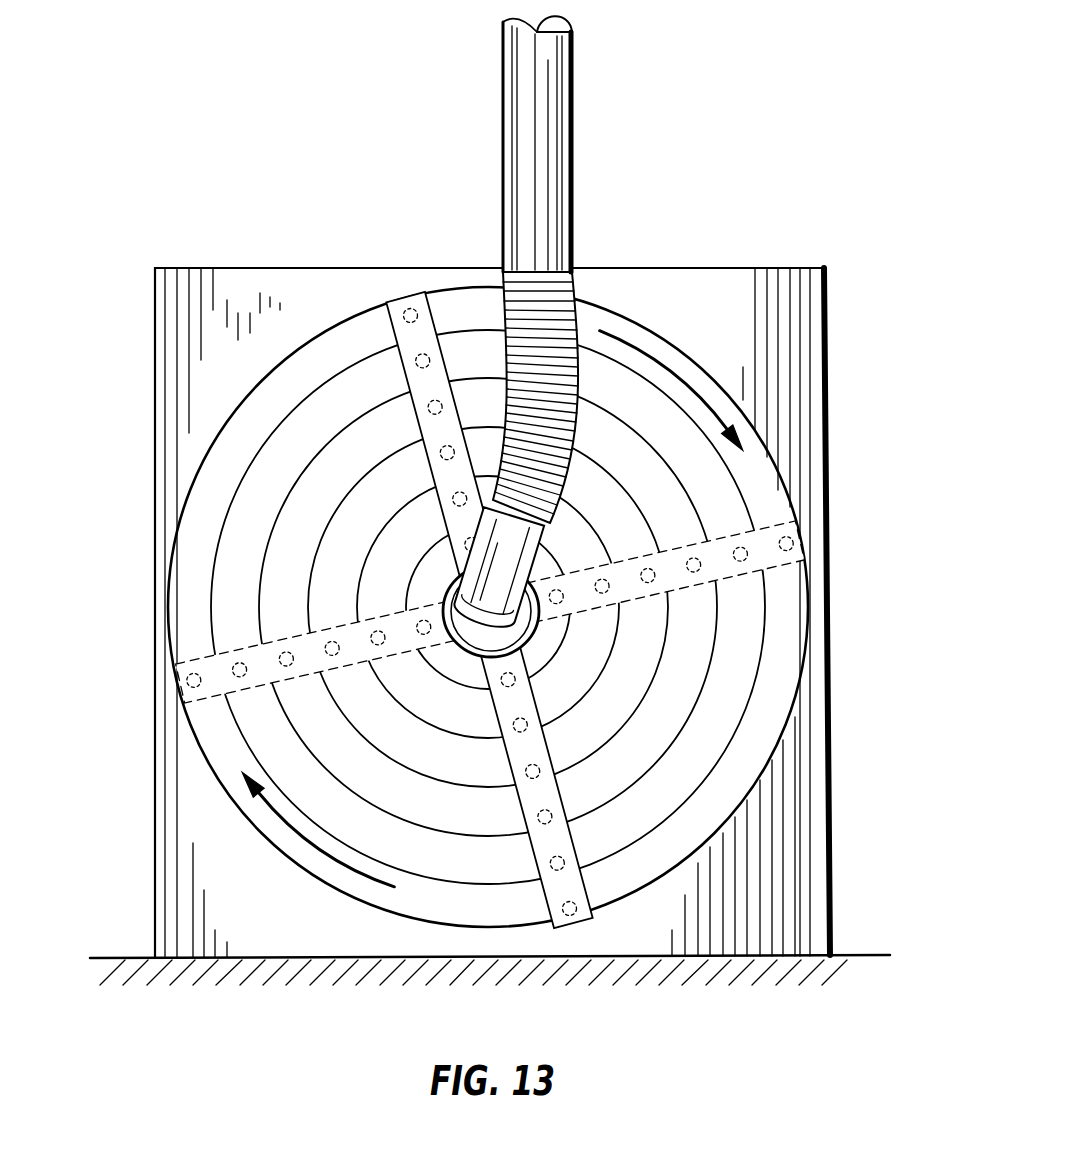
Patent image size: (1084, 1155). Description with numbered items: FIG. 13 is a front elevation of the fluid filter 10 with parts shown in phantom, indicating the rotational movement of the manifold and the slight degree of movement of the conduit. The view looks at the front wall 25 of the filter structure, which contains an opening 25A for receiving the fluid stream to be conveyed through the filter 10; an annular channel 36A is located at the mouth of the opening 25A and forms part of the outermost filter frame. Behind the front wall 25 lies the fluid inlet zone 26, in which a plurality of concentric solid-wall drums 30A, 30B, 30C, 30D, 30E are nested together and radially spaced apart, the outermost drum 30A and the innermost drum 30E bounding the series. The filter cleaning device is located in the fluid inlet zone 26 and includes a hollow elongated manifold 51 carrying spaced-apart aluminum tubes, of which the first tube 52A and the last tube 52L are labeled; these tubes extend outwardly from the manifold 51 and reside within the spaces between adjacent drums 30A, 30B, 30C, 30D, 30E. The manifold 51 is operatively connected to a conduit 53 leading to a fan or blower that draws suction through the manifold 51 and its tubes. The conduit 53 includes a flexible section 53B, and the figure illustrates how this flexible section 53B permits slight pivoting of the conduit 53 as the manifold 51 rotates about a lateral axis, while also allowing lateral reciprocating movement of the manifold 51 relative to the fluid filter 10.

The fluid filter 10 is at (769, 222).
The front wall 25 is at (712, 307).
The opening 25A is at (214, 476).
The fluid inlet zone 26 is at (718, 375).
The outermost drum 30A is at (216, 550).
The drum 30B is at (258, 605).
The drum 30C is at (668, 640).
The drum 30D is at (580, 700).
The drum 30E is at (412, 637).
The annular channel 36A is at (237, 415).
The manifold 51 is at (432, 318).
The tube 52A is at (404, 304).
The tube 52L is at (575, 913).
The conduit 53 is at (545, 164).
The flexible section 53B is at (570, 348).